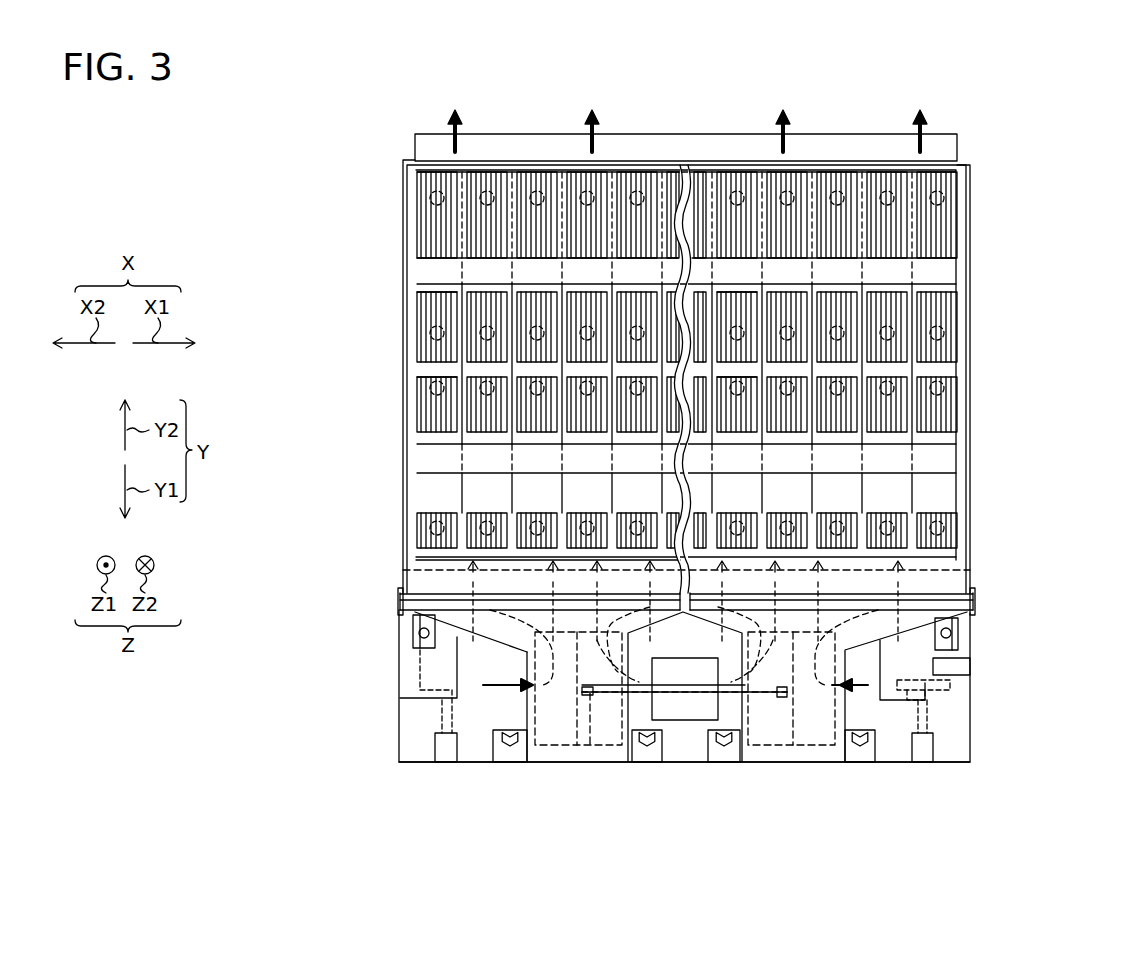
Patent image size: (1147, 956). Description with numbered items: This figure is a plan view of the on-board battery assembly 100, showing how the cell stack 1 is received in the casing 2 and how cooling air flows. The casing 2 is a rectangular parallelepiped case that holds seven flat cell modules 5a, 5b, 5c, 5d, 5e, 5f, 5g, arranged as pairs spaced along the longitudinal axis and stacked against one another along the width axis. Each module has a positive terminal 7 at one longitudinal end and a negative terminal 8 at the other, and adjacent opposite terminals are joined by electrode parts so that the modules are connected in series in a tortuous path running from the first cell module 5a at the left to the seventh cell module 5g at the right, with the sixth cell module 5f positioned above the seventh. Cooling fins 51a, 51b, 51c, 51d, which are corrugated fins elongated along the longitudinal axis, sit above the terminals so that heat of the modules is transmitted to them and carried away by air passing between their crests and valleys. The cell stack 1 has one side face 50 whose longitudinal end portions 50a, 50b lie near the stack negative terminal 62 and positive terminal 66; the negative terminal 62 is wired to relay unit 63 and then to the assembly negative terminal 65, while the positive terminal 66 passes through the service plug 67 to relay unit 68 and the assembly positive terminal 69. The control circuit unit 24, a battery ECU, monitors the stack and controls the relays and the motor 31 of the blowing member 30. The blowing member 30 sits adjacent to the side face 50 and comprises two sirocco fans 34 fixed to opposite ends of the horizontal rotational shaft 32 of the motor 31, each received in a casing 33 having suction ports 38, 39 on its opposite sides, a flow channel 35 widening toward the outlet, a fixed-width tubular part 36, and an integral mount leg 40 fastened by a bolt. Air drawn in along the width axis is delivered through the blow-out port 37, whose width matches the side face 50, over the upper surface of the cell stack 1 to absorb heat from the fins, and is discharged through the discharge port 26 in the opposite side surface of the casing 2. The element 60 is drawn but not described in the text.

The cell stack 1 is at (995, 296).
The casing 2 is at (970, 426).
The first cell module 5a is at (530, 483).
The second cell module 5b is at (418, 242).
The third cell module 5c is at (418, 280).
The fourth cell module 5d is at (480, 481).
The fifth cell module 5e is at (480, 458).
The sixth cell module 5f is at (950, 250).
The seventh cell module 5g is at (948, 462).
The positive terminal 7 is at (435, 170).
The negative terminal 8 is at (497, 170).
The control circuit unit 24 is at (677, 772).
The discharge port 26 is at (823, 134).
The blowing member 30 is at (763, 775).
The motor 31 is at (691, 722).
The rotational shaft 32 is at (588, 757).
The casing of blowing member 33 is at (552, 757).
The sirocco fan 34 is at (533, 757).
The flow channel 35 is at (413, 640).
The tubular part 36 is at (402, 595).
The blow-out port 37 is at (402, 610).
The suction port 38 is at (440, 735).
The suction port 39 is at (643, 757).
The mount leg 40 is at (497, 757).
The one side face 50 is at (950, 545).
The longitudinal end portion 50a is at (463, 556).
The longitudinal end portion 50b is at (945, 560).
The cooling fin 51a is at (420, 518).
The cooling fin 51b is at (423, 407).
The cooling fin 51c is at (423, 302).
The cooling fin 51d is at (1072, 219).
The support member 60 is at (400, 603).
The negative terminal of cell stack 62 is at (445, 660).
The relay unit 63 is at (527, 712).
The negative terminal of battery assembly 65 is at (440, 757).
The positive terminal of cell stack 66 is at (968, 647).
The service plug 67 is at (960, 670).
The relay unit 68 is at (910, 663).
The positive terminal of battery assembly 69 is at (920, 757).
The on-board battery assembly 100 is at (992, 95).